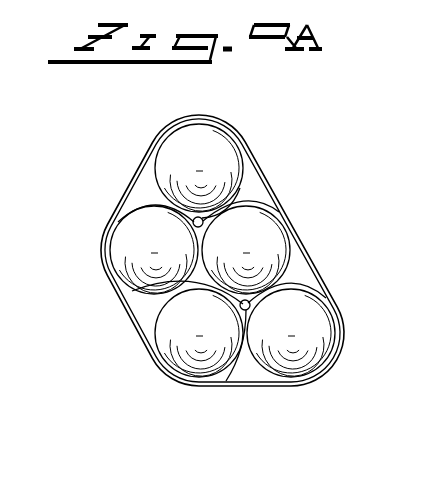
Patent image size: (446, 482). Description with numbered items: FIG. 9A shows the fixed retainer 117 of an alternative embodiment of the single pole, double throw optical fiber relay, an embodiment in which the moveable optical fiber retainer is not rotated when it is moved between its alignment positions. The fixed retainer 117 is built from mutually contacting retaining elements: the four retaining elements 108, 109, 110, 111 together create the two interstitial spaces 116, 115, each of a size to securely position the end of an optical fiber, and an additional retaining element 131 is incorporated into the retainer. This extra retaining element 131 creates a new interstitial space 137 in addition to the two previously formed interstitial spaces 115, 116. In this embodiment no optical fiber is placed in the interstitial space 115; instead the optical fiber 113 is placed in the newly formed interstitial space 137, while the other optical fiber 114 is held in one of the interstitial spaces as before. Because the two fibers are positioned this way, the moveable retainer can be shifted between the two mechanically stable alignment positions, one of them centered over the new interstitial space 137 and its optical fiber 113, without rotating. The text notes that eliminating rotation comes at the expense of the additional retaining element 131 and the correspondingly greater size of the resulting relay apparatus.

The fixed retainer 117 is at (104, 192).
The additional retaining element 131 is at (190, 142).
The retaining element 108 is at (128, 262).
The retaining element 111 is at (274, 246).
The retaining element 109 is at (178, 350).
The retaining element 110 is at (308, 350).
The interstitial space 137 is at (207, 219).
The optical fiber 113 is at (209, 212).
The interstitial space 116 is at (263, 297).
The interstitial space 115 is at (127, 292).
The optical fiber 114 is at (227, 381).